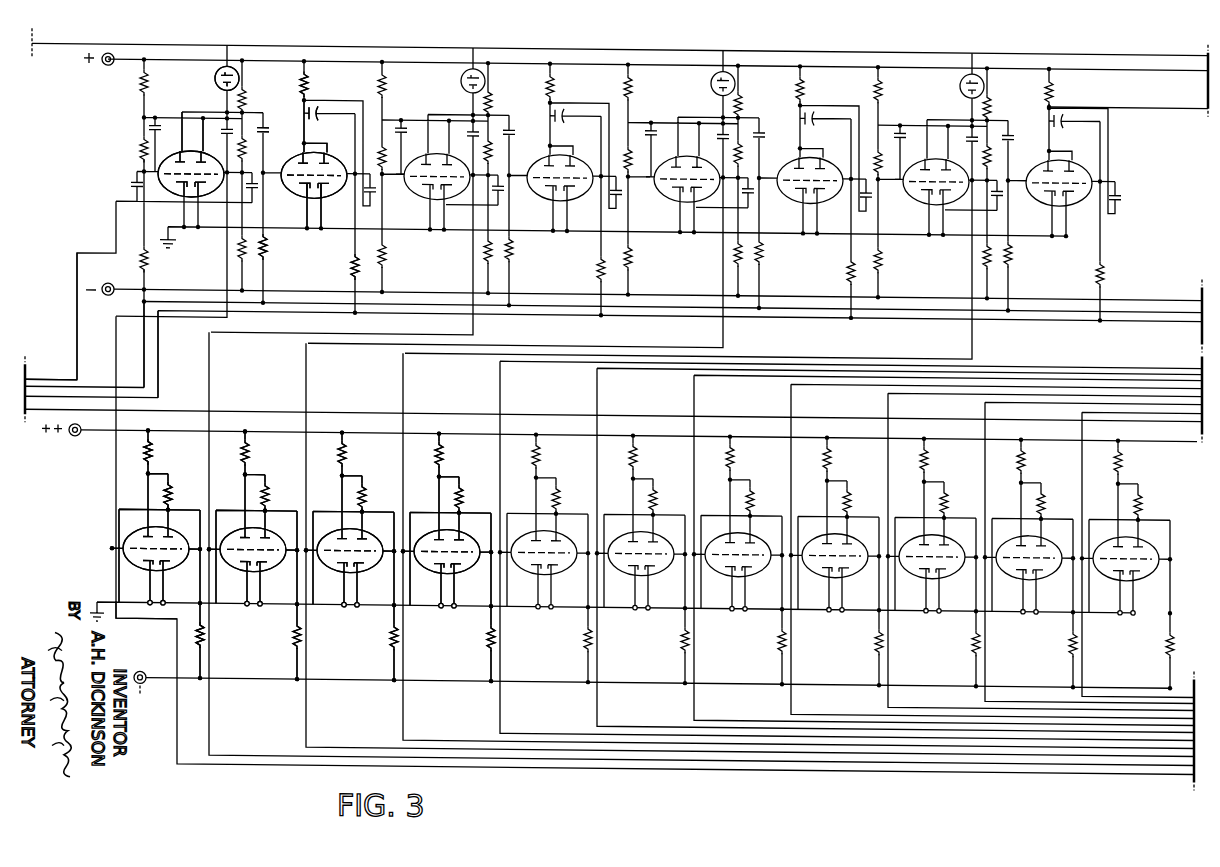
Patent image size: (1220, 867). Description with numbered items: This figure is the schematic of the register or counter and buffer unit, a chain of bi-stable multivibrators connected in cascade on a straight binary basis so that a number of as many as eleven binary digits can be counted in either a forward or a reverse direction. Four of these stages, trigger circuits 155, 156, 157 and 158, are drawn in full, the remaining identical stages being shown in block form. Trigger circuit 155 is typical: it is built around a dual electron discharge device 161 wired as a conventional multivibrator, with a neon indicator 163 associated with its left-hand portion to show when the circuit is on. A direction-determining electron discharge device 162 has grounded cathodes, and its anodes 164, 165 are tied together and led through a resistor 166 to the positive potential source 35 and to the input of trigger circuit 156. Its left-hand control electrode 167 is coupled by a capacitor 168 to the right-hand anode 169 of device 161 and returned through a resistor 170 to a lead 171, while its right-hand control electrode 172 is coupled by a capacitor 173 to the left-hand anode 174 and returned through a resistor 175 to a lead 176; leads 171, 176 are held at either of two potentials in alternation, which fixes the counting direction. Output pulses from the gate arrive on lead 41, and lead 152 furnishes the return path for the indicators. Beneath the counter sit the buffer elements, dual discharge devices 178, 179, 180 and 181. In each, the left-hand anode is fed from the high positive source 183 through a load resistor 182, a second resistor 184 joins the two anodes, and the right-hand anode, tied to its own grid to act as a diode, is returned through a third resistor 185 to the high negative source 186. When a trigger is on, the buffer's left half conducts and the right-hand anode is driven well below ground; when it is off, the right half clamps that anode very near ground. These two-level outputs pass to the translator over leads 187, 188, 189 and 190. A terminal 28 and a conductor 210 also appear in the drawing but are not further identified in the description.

The lead 152 is at (76, 39).
The positive potential source 35 is at (107, 64).
The trigger circuit 155 is at (191, 101).
The trigger circuit 156 is at (445, 88).
The trigger circuit 157 is at (686, 88).
The trigger circuit 158 is at (943, 98).
The neon indicator 163 is at (214, 74).
The resistor 166 is at (300, 78).
The capacitor 173 is at (317, 103).
The capacitor 168 is at (265, 129).
The left-hand anode 174 is at (170, 131).
The right-hand anode 169 is at (215, 134).
The anode 164 is at (303, 148).
The anode 165 is at (326, 151).
The electron discharge device 161 is at (176, 191).
The direction-determining electron discharge device 162 is at (302, 190).
The left-hand control electrode 167 is at (307, 196).
The right-hand control electrode 172 is at (323, 193).
The resistor 175 is at (352, 258).
The resistor 170 is at (266, 252).
The negative terminal 28 is at (113, 283).
The lead 41 is at (78, 335).
The lead 171 is at (140, 357).
The lead 176 is at (157, 371).
The conductor 210 is at (572, 409).
The source of high positive potential 183 is at (76, 436).
The load impedance element 182 is at (153, 455).
The second impedance element 184 is at (171, 490).
The dual electron discharge device 178 is at (163, 570).
The dual electron discharge device 179 is at (261, 570).
The dual electron discharge device 180 is at (356, 570).
The dual electron discharge device 181 is at (453, 570).
The third impedance element 185 is at (196, 628).
The lead 187 is at (124, 632).
The source of high negative potential 186 is at (146, 683).
The lead 188 is at (211, 667).
The lead 189 is at (311, 667).
The lead 190 is at (406, 670).